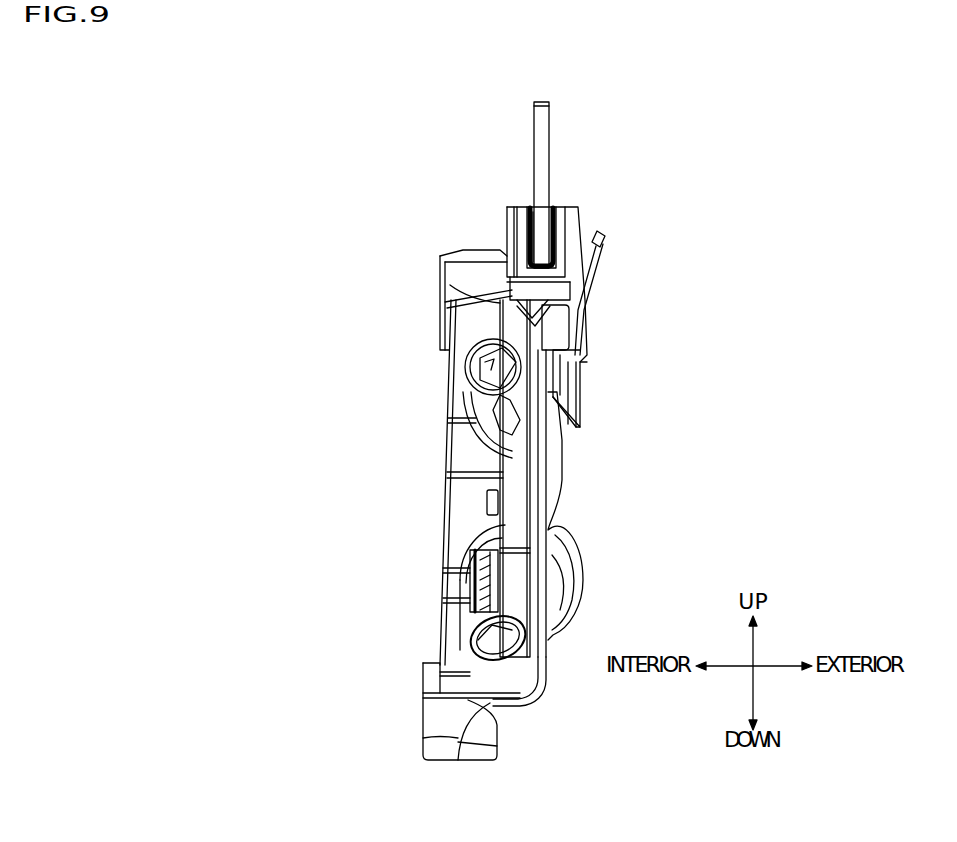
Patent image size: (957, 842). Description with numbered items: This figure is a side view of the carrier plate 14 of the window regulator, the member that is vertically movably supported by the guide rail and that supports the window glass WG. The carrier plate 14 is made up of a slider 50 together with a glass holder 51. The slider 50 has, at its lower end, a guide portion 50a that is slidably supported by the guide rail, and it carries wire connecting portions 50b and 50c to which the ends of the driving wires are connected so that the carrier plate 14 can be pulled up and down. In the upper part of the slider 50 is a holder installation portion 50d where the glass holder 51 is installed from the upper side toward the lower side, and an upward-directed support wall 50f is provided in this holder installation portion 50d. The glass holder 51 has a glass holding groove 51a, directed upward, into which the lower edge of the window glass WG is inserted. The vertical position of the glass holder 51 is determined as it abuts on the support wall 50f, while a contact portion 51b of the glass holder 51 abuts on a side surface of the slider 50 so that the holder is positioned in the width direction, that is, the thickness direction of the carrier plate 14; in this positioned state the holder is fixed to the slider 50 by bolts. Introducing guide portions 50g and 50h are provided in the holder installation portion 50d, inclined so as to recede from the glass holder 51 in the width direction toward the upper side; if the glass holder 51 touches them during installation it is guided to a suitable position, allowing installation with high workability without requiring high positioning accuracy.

The window glass WG is at (546, 130).
The glass holder 51 is at (520, 213).
The glass holding groove 51a is at (544, 238).
The contact portion 51b is at (569, 396).
The slider 50 is at (560, 466).
The guide portion 50a is at (434, 739).
The wire connecting portion 50b is at (490, 578).
The wire connecting portion 50c is at (490, 408).
The holder installation portion 50d is at (548, 318).
The support wall 50f is at (530, 290).
The introducing guide portion 50g is at (599, 248).
The introducing guide portion 50h is at (603, 241).
The carrier plate 14 is at (608, 372).